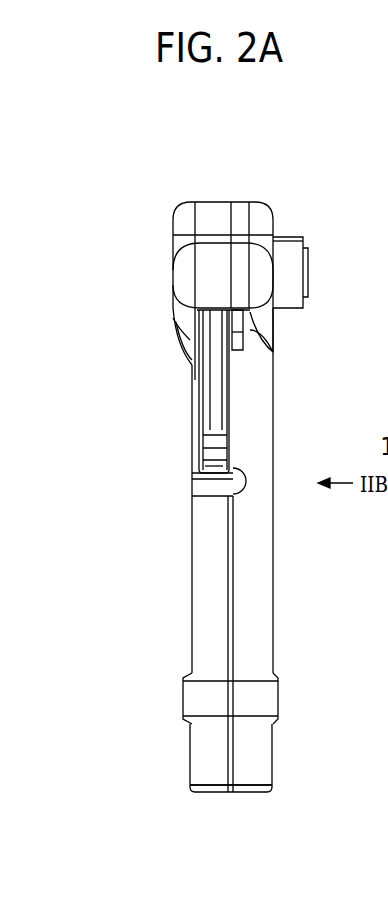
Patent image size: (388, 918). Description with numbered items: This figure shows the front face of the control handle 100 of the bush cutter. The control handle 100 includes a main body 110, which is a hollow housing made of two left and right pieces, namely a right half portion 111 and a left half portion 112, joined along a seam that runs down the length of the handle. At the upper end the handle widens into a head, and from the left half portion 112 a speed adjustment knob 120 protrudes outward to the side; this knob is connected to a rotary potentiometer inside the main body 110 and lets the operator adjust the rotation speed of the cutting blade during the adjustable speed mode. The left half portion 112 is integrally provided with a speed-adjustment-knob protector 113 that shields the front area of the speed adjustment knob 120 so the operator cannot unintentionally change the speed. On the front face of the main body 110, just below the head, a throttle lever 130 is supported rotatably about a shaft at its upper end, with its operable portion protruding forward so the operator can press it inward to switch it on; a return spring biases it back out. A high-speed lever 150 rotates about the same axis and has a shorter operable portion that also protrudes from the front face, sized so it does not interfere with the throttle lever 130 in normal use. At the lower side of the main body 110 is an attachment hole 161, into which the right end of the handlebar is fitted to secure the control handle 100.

The control handle 100 is at (137, 144).
The main body 110 is at (260, 138).
The right half portion 111 is at (213, 207).
The left half portion 112 is at (240, 207).
The speed-adjustment-knob protector 113 is at (298, 300).
The speed adjustment knob 120 is at (312, 268).
The throttle lever 130 is at (213, 372).
The high-speed lever 150 is at (252, 350).
The attachment hole 161 is at (200, 789).